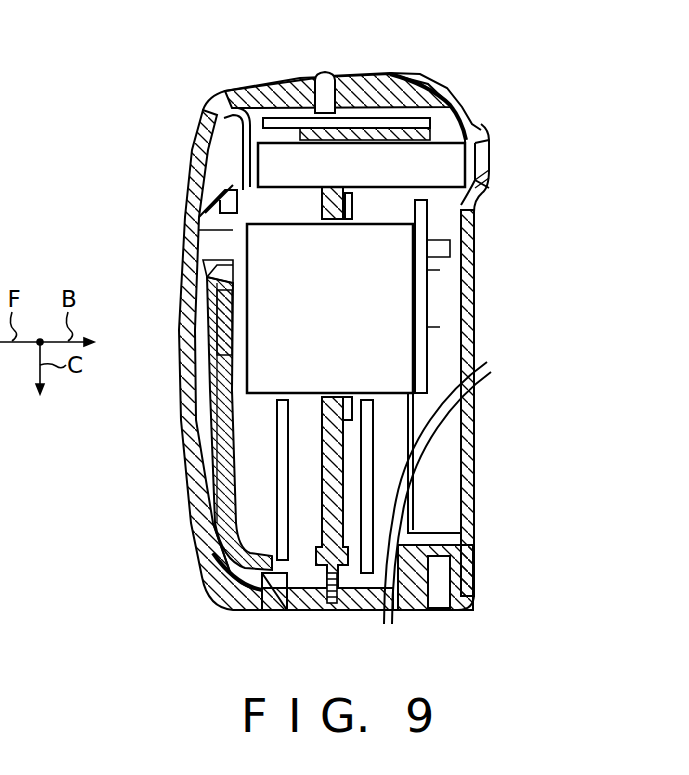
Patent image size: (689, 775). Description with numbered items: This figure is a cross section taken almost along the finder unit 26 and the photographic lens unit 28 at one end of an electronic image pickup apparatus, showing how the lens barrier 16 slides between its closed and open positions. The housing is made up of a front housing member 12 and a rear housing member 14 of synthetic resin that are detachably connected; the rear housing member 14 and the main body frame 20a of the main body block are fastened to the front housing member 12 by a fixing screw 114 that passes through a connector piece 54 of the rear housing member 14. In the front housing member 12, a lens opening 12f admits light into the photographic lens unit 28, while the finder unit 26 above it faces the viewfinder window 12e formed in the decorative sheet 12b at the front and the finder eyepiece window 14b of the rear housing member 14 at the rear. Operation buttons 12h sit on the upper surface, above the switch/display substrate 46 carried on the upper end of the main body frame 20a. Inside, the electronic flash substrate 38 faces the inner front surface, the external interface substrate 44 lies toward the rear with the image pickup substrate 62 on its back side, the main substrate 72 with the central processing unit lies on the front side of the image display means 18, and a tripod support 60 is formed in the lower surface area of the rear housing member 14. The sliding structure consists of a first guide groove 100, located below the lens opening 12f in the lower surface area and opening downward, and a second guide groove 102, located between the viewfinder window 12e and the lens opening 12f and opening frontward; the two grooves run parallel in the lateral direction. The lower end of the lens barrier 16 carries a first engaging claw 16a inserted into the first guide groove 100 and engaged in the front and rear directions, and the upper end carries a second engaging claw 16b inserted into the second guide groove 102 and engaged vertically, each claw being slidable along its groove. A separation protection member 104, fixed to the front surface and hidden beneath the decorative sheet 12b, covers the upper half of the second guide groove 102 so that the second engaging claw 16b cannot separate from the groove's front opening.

The front housing member 12 is at (205, 415).
The decorative sheet 12b is at (205, 237).
The viewfinder window 12e is at (190, 168).
The lens opening 12f is at (215, 318).
The operation buttons 12h is at (318, 72).
The rear housing member 14 is at (475, 247).
The finder eyepiece window 14b is at (490, 140).
The lens barrier 16 is at (190, 365).
The first engaging claw 16a is at (254, 612).
The second engaging claw 16b is at (235, 228).
The image display means 18 is at (432, 466).
The main body frame 20a is at (322, 428).
The finder unit 26 is at (450, 153).
The photographic lens unit 28 is at (397, 293).
The electronic flash substrate 38 is at (277, 490).
The external interface substrate 44 is at (373, 425).
The switch/display substrate 46 is at (413, 123).
The connector piece 54 is at (407, 605).
The tripod support 60 is at (437, 537).
The image pickup substrate 62 is at (427, 350).
The main substrate 72 is at (350, 210).
The first guide groove 100 is at (227, 567).
The second guide groove 102 is at (215, 250).
The separation protection member 104 is at (205, 215).
The fixing screw 114 is at (330, 612).